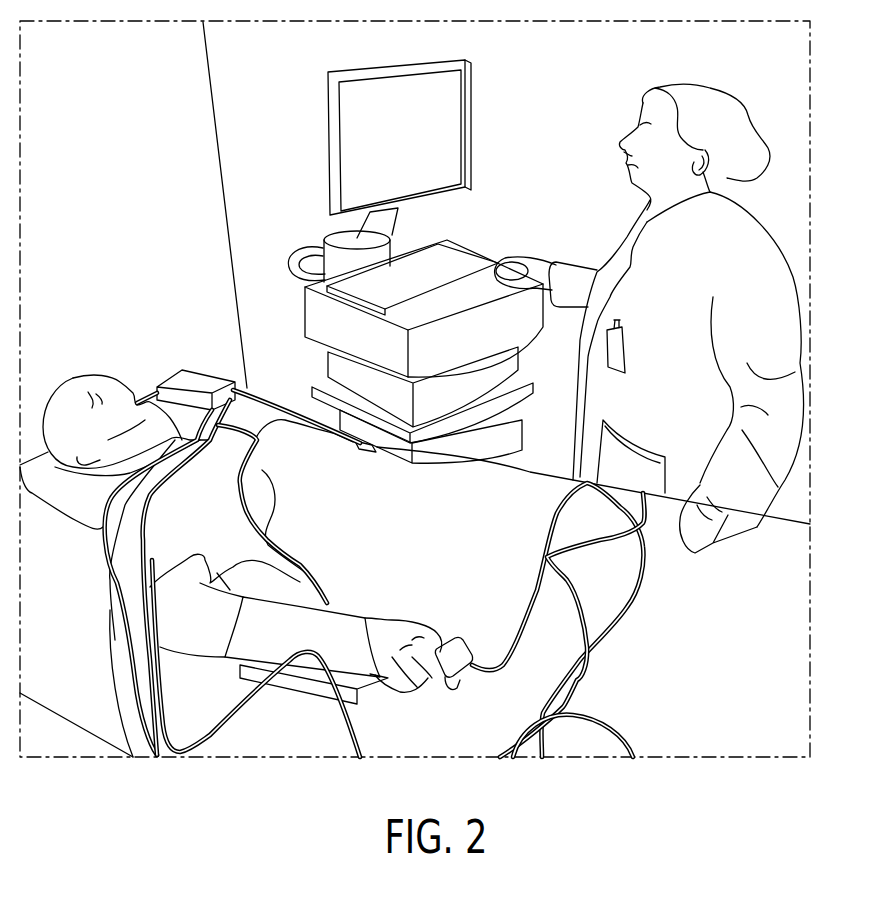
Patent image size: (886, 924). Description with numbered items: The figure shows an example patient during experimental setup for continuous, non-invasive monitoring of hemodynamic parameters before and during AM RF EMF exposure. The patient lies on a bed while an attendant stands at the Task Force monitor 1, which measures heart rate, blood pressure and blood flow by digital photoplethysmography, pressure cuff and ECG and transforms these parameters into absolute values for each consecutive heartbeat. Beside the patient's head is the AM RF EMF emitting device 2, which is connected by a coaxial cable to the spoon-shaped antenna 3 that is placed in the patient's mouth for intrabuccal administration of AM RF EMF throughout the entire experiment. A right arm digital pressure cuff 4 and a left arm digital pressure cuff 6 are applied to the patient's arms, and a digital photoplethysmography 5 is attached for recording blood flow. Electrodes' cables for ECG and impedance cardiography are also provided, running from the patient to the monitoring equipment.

The Task Force monitor 1 is at (327, 163).
The AM RF EMF emitting device 2 is at (165, 381).
The spoon-shaped antenna 3 is at (350, 618).
The right arm digital pressure cuff 4 is at (465, 650).
The digital photoplethysmography 5 is at (363, 452).
The left arm digital pressure cuff 6 is at (153, 717).